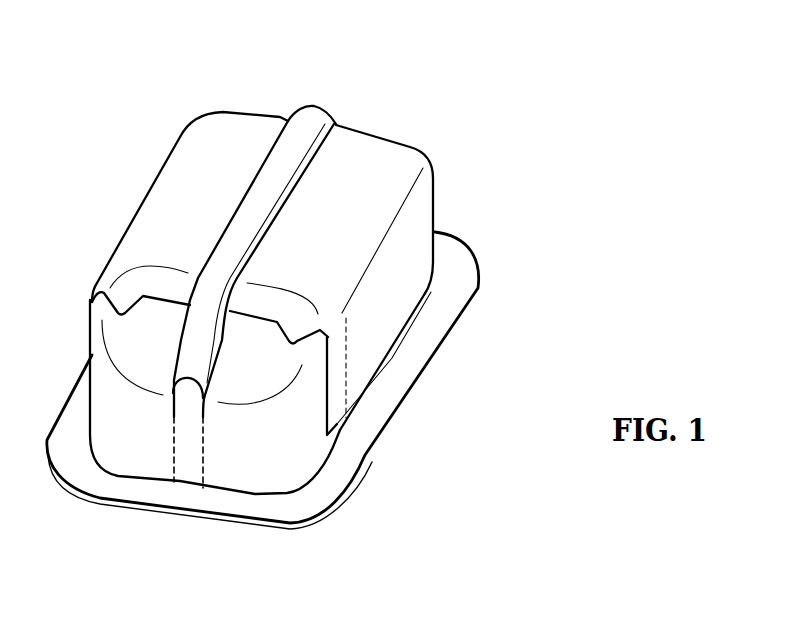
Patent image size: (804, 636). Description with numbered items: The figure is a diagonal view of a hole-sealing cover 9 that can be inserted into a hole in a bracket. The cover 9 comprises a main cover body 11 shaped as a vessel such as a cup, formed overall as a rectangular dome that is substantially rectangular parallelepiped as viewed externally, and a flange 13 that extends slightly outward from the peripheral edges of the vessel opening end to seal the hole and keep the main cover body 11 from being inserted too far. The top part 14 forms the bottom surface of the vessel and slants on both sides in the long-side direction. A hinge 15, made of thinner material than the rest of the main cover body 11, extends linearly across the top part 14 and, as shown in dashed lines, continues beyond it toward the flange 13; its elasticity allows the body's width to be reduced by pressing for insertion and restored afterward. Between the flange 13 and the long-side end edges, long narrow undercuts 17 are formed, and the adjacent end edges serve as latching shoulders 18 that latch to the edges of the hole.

The cover 9 is at (417, 98).
The main cover body 11 is at (437, 212).
The flange 13 is at (430, 330).
The top part 14 is at (225, 145).
The hinge 15 is at (277, 153).
The undercut 17 is at (363, 481).
The latching shoulder 18 is at (332, 443).